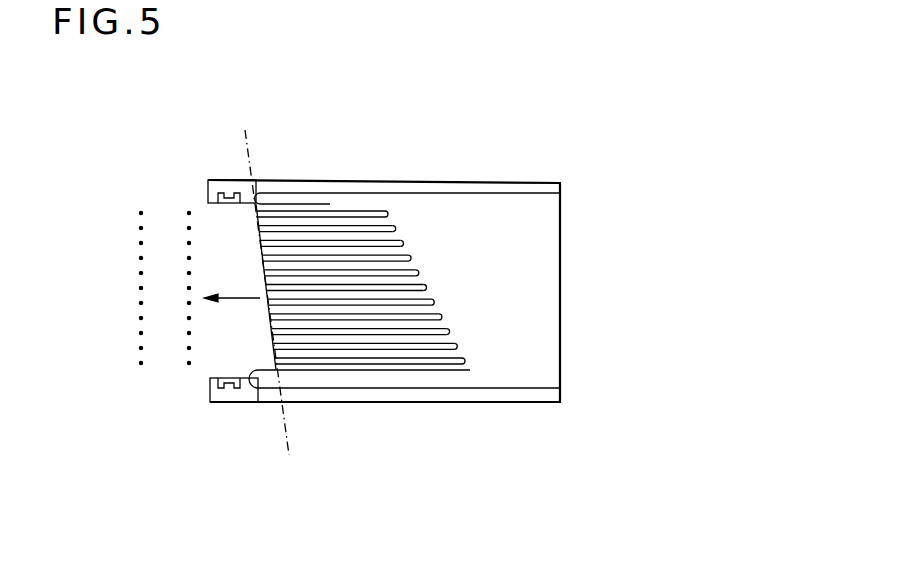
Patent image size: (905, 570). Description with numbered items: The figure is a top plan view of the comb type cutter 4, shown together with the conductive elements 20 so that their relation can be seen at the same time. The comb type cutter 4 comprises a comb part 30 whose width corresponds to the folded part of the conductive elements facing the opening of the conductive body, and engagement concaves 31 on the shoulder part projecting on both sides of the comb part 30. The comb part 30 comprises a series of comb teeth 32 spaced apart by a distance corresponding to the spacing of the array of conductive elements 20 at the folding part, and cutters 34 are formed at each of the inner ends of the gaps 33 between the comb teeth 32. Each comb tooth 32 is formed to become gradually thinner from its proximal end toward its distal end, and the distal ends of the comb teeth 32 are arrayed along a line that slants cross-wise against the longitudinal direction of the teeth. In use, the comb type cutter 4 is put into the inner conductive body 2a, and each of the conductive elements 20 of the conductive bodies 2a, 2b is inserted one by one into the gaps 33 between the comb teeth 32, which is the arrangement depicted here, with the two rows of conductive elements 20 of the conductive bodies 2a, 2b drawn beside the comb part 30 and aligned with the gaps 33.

The comb type cutter 4 is at (593, 190).
The comb part 30 is at (418, 217).
The engagement concave 31 is at (231, 191).
The comb teeth 32 is at (363, 240).
The gaps 33 is at (295, 332).
The cutters 34 is at (430, 303).
The conductive elements 20 is at (188, 245).
The inner conductive body 2a is at (187, 375).
The conductive body 2b is at (137, 372).